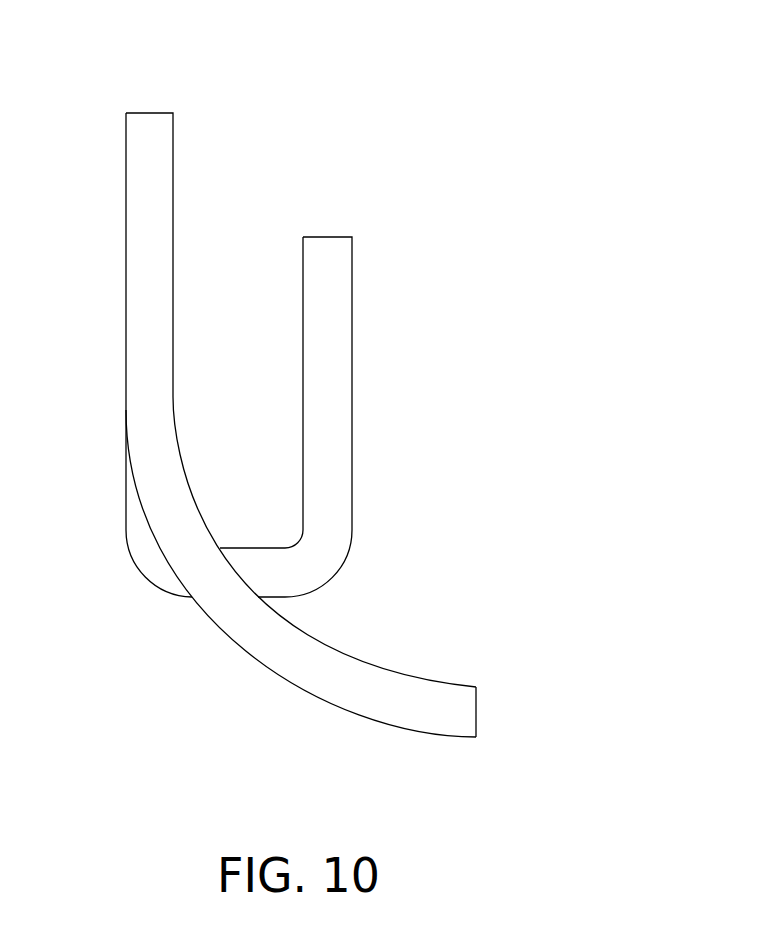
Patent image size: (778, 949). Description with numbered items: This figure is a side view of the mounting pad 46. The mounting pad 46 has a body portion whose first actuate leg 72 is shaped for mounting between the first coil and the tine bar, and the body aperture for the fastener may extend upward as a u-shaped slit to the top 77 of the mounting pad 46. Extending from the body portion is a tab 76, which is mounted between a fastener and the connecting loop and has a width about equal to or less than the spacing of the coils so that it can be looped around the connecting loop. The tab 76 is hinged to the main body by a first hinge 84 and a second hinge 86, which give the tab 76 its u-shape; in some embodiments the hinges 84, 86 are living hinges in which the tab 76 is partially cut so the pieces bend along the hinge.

The mounting pad 46 is at (257, 386).
The top 77 is at (147, 190).
The tab 76 is at (352, 323).
The first hinge 84 is at (153, 562).
The second hinge 86 is at (320, 555).
The first actuate leg 72 is at (328, 686).